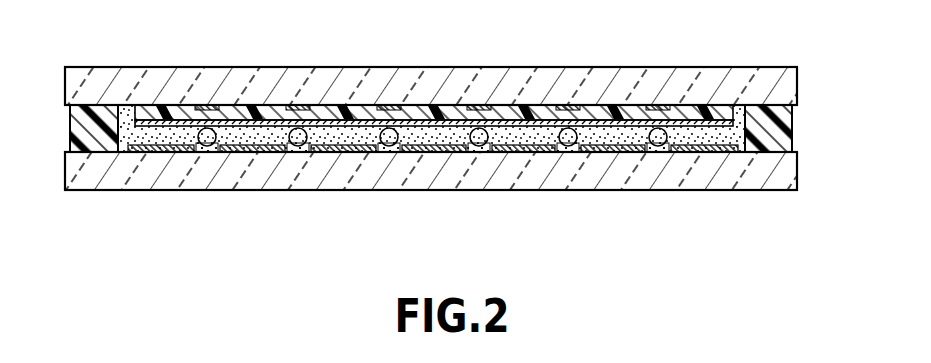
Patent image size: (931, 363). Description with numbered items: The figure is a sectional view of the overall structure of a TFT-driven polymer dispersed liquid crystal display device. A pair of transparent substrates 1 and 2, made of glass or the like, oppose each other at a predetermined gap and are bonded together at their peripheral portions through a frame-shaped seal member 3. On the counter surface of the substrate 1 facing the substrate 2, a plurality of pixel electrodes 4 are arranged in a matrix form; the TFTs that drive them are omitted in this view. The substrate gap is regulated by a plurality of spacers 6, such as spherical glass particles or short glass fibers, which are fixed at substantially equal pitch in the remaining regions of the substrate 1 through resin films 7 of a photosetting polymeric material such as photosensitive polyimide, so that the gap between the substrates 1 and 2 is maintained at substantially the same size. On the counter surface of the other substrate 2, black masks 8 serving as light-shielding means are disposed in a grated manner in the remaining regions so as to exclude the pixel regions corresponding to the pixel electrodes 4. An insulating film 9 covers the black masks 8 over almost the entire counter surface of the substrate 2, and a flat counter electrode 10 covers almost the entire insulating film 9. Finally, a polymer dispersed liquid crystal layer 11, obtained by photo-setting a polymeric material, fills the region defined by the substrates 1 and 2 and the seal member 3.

The transparent substrate 1 is at (374, 168).
The transparent substrate 2 is at (425, 82).
The seal member 3 is at (80, 128).
The pixel electrodes 4 is at (156, 150).
The spacers 6 is at (232, 150).
The resin films 7 is at (207, 146).
The black masks 8 is at (207, 104).
The insulating film 9 is at (627, 106).
The counter electrode 10 is at (326, 117).
The polymer dispersed liquid crystal layer 11 is at (544, 124).